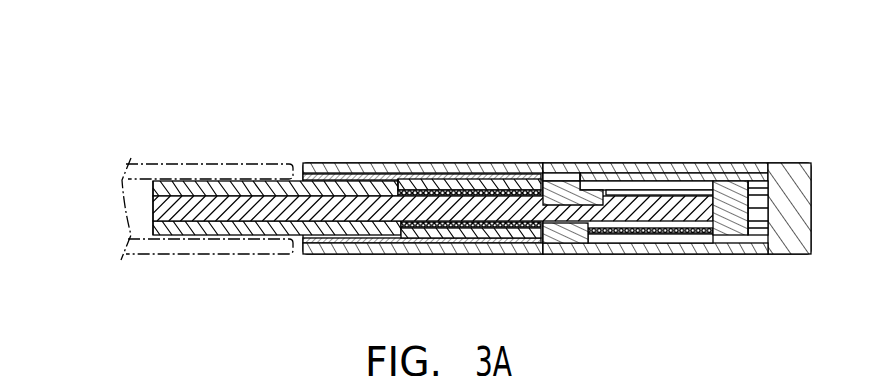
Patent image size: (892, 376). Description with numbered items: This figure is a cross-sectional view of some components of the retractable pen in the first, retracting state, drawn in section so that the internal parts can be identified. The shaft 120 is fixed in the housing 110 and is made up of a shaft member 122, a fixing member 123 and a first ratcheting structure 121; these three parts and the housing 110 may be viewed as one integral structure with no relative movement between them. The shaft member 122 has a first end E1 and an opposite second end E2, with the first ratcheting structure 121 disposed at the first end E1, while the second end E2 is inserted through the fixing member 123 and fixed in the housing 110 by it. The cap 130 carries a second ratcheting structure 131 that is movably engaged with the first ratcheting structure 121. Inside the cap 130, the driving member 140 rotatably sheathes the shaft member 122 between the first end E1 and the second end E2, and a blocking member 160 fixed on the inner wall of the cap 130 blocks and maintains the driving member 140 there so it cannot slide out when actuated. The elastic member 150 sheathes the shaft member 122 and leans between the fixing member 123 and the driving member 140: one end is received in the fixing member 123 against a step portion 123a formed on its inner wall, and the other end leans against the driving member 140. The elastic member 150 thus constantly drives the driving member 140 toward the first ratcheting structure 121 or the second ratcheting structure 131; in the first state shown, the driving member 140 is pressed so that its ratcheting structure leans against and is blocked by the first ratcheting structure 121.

The housing 110 is at (237, 165).
The shaft 120 is at (391, 151).
The first ratcheting structure 121 is at (618, 182).
The shaft member 122 is at (212, 208).
The fixing member 123 is at (190, 178).
The step portion 123a is at (386, 180).
The cap 130 is at (750, 156).
The second ratcheting structure 131 is at (661, 167).
The driving member 140 is at (556, 232).
The elastic member 150 is at (485, 175).
The blocking member 160 is at (337, 237).
The first end E1 is at (733, 201).
The second end E2 is at (141, 203).